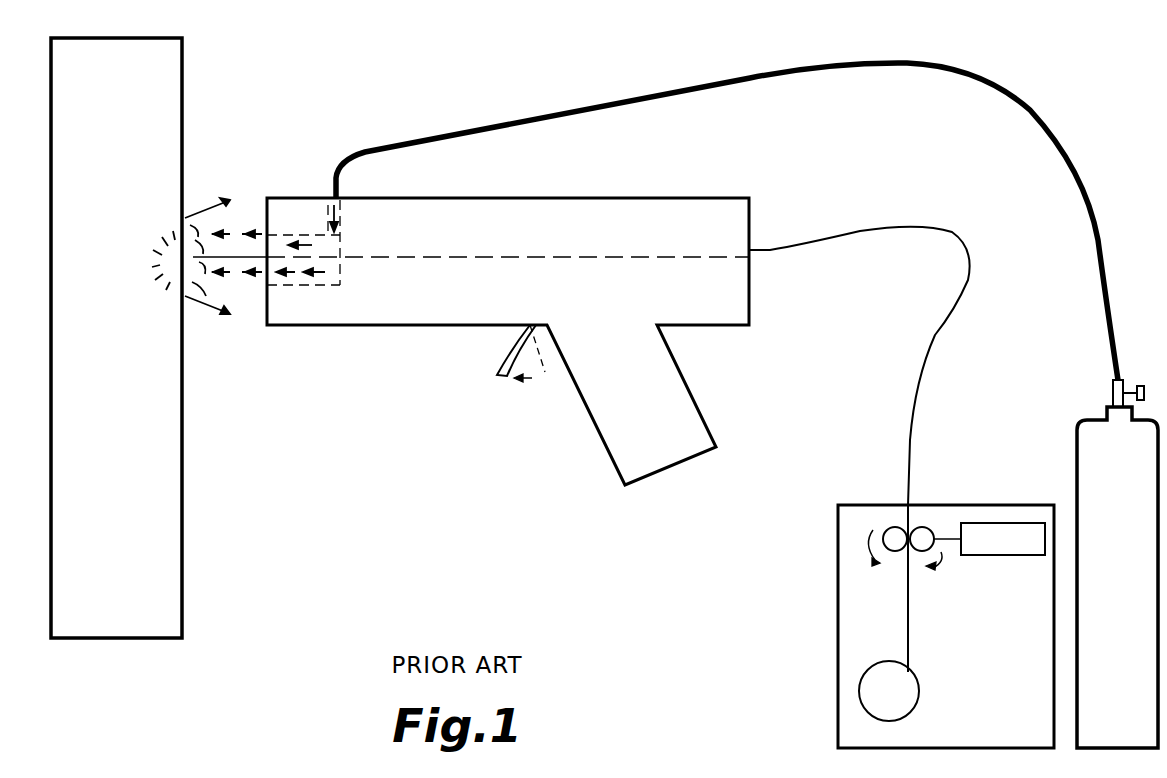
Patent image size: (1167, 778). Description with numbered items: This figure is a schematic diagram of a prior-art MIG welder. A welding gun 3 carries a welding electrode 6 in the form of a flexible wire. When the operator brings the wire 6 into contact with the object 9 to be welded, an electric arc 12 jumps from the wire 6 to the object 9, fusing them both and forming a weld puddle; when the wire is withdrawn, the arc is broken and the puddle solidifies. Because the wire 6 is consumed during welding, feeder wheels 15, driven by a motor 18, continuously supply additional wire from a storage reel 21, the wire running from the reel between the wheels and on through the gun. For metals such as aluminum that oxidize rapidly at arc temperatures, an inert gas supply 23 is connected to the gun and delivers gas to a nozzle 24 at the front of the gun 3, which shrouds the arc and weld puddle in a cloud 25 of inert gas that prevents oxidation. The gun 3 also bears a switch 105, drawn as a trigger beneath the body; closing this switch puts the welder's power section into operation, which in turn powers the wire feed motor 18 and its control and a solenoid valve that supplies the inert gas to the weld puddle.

The welding gun 3 is at (476, 327).
The welding electrode 6 is at (422, 257).
The object 9 is at (125, 583).
The electric arc 12 is at (166, 287).
The feeder wheels 15 is at (892, 505).
The motor 18 is at (984, 555).
The storage reel 21 is at (908, 701).
The inert gas supply 23 is at (1128, 495).
The nozzle 24 is at (293, 235).
The cloud of inert gas 25 is at (232, 204).
The switch 105 is at (530, 383).